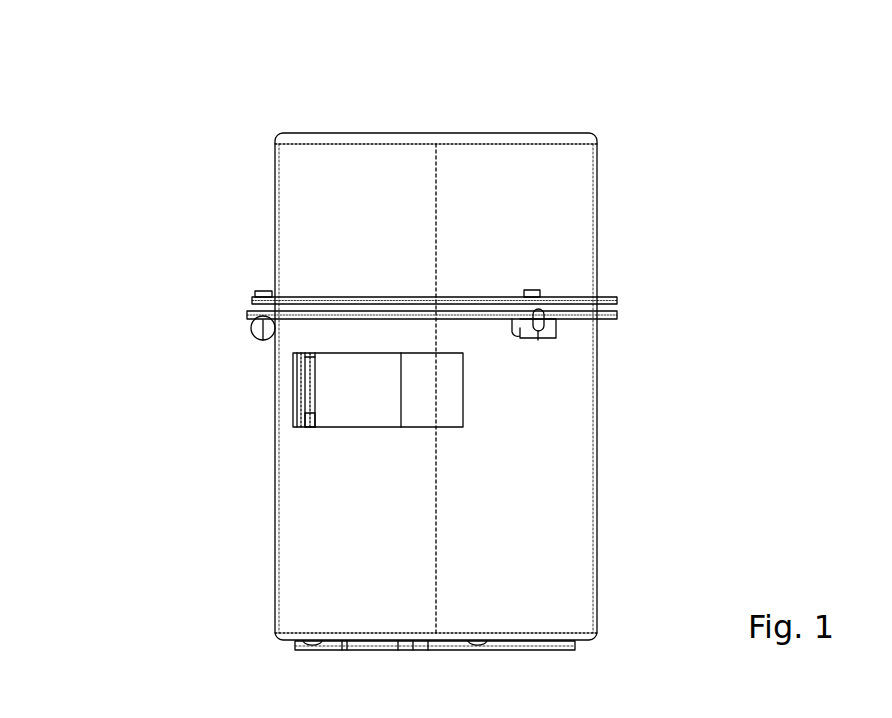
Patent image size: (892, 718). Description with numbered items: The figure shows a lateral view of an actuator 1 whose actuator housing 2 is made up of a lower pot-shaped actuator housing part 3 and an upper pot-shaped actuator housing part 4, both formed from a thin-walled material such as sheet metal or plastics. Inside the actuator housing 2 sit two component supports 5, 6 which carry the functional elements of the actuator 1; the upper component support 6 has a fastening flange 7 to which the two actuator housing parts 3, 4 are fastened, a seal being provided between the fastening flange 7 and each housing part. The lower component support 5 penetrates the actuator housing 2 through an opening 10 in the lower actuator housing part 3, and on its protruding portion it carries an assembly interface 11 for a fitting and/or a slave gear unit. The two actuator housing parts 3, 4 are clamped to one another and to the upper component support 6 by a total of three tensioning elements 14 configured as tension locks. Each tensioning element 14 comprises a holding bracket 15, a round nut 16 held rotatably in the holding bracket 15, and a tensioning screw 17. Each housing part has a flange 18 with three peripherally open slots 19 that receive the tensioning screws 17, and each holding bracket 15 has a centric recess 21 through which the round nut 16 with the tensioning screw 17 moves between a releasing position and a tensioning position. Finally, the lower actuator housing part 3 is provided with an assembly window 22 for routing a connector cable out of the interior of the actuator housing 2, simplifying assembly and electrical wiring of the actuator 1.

The actuator 1 is at (446, 86).
The actuator housing 2 is at (190, 257).
The lower pot-shaped actuator housing part 3 is at (583, 470).
The upper pot-shaped actuator housing part 4 is at (583, 207).
The lower component support 5 is at (600, 640).
The upper component support 6 is at (254, 268).
The fastening flange 7 is at (598, 308).
The opening 10 is at (361, 652).
The assembly interface 11 is at (455, 650).
The tensioning element 14 is at (533, 266).
The holding bracket 15 is at (250, 317).
The round nut 16 is at (263, 340).
The tensioning screw 17 is at (255, 297).
The flange 18 is at (598, 297).
The slot 19 is at (267, 270).
The centric recess 21 is at (252, 326).
The assembly window 22 is at (293, 420).